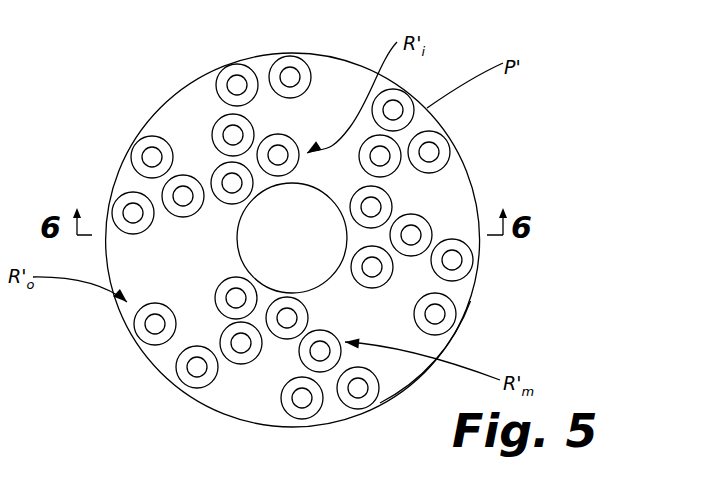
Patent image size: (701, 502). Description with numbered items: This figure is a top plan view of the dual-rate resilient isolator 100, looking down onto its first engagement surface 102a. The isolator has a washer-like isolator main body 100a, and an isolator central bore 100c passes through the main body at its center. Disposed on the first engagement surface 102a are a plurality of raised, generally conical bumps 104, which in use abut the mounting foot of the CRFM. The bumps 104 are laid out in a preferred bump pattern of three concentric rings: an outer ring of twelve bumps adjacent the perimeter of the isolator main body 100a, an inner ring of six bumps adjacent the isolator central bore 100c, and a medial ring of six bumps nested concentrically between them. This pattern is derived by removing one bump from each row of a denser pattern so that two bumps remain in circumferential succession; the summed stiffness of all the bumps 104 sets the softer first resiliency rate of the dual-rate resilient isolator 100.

The dual-rate resilient isolator 100 is at (487, 293).
The isolator main body 100a is at (441, 356).
The isolator central bore 100c is at (314, 250).
The first engagement surface 102a is at (200, 287).
The bumps 104 is at (217, 167).